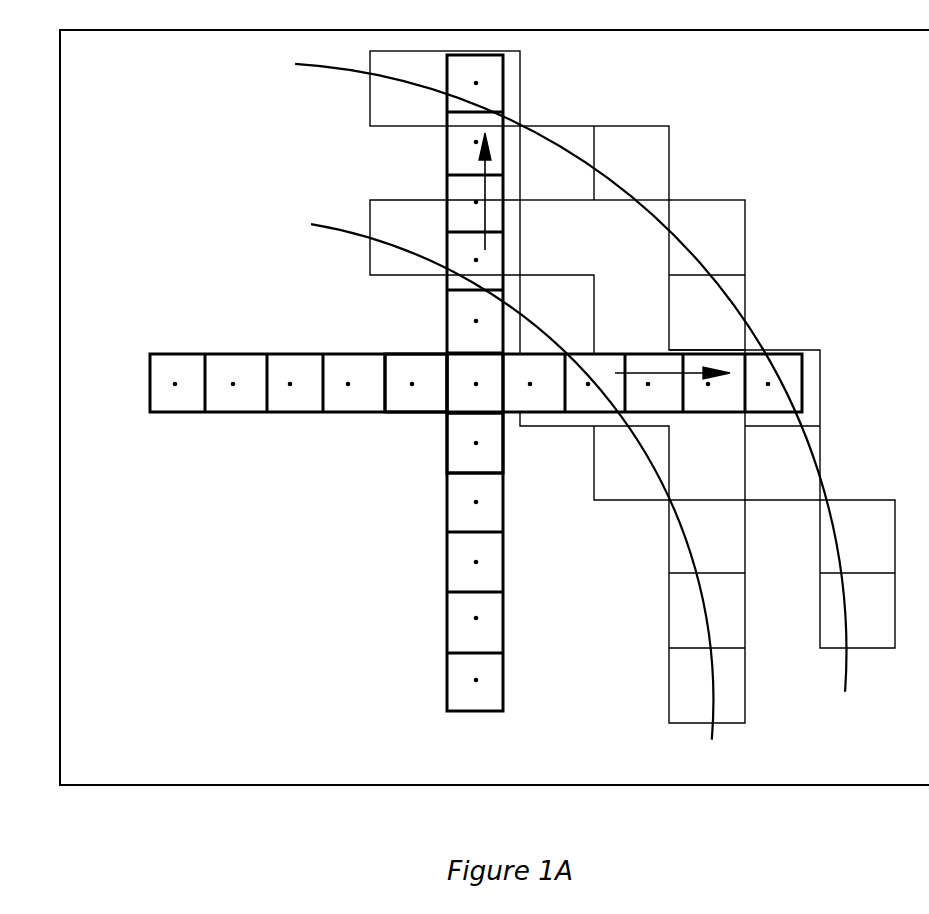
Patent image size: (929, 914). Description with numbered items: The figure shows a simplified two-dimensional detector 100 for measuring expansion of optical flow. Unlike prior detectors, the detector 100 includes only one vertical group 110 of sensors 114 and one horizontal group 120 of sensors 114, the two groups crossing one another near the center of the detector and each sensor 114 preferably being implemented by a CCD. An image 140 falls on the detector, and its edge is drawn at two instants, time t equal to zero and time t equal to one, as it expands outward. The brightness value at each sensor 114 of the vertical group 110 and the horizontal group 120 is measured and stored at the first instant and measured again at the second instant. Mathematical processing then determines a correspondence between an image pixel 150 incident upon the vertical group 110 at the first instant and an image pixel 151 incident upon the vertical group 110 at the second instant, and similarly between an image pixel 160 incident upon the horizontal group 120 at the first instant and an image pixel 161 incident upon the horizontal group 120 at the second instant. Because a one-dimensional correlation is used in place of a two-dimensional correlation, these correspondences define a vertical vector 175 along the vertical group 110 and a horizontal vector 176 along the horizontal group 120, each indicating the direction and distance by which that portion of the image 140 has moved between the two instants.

The two-dimensional detector 100 is at (857, 785).
The vertical group of sensors 110 is at (488, 713).
The horizontal group of sensors 120 is at (197, 414).
The sensor 114 is at (443, 450).
The image 140 is at (328, 72).
The image pixel 150 is at (513, 272).
The image pixel 151 is at (519, 80).
The image pixel 160 is at (585, 428).
The image pixel 161 is at (808, 350).
The vector 175 is at (487, 203).
The vector 176 is at (660, 368).